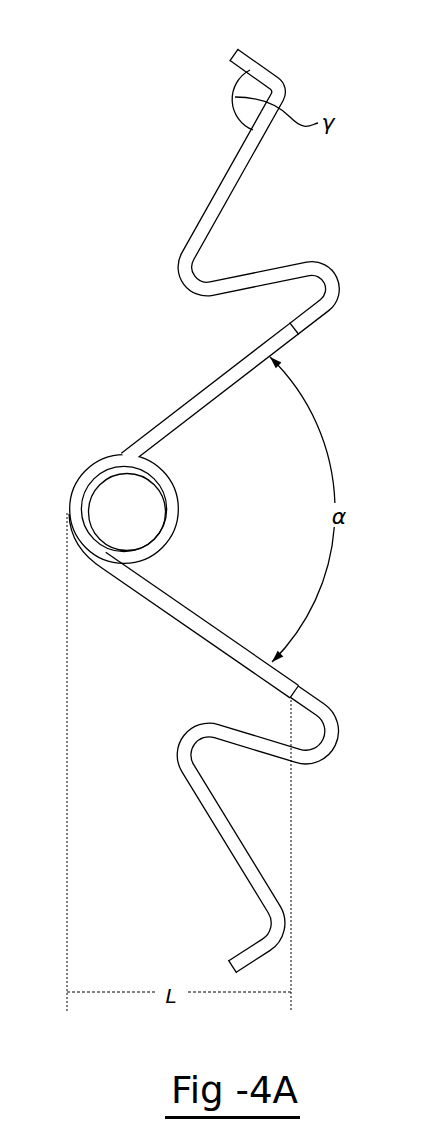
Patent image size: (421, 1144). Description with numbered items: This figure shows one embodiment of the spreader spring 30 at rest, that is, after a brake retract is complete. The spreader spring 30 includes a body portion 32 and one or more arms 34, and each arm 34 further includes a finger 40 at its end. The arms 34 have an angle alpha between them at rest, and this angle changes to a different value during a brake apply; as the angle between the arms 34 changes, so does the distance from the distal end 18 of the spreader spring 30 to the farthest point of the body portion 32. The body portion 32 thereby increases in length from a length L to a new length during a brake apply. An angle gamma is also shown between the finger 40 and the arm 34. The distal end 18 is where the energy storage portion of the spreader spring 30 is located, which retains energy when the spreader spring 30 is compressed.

The spreader spring 30 is at (211, 489).
The distal end 18 is at (70, 497).
The body portion 32 is at (195, 396).
The arm 34 is at (224, 178).
The finger 40 is at (260, 64).